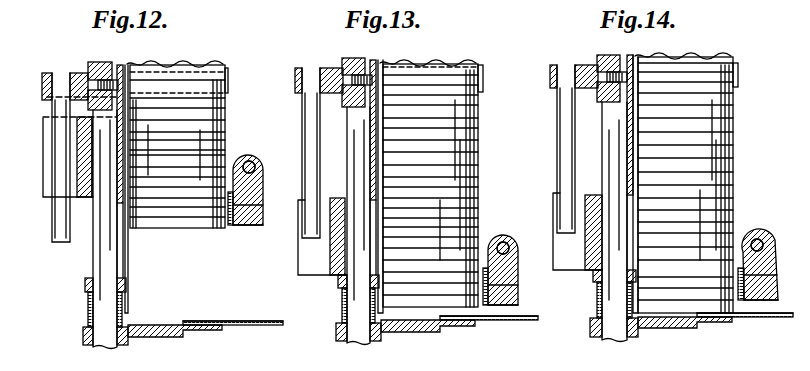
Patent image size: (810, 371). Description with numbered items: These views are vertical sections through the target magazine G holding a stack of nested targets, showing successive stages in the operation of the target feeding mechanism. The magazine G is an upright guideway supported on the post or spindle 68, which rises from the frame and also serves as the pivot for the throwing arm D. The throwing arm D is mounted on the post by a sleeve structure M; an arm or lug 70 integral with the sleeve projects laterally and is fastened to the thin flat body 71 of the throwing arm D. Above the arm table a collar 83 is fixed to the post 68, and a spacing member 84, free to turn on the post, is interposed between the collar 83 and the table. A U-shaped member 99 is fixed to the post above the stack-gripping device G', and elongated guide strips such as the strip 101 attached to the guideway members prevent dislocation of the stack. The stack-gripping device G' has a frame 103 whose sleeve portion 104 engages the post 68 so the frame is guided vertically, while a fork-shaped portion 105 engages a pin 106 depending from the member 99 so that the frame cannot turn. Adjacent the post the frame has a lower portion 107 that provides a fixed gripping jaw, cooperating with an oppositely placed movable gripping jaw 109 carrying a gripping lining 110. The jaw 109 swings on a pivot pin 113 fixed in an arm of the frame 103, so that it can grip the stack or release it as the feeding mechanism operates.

In FIG. 12, the U-shaped member 99 is at (76, 74).
In FIG. 13, the U-shaped member 99 is at (326, 69).
In FIG. 14, the U-shaped member 99 is at (581, 66).
In FIG. 12, the post or spindle 68 is at (95, 62).
In FIG. 13, the post or spindle 68 is at (346, 58).
In FIG. 14, the post or spindle 68 is at (601, 55).
In FIG. 12, the pin 106 is at (55, 114).
In FIG. 13, the pin 106 is at (305, 152).
In FIG. 14, the pin 106 is at (560, 148).
In FIG. 12, the fork-shaped portion 105 is at (45, 130).
In FIG. 13, the fork-shaped portion 105 is at (298, 212).
In FIG. 14, the fork-shaped portion 105 is at (553, 192).
In FIG. 12, the sleeve portion 104 is at (85, 164).
In FIG. 13, the sleeve portion 104 is at (333, 240).
In FIG. 14, the sleeve portion 104 is at (590, 210).
In FIG. 12, the frame 103 is at (88, 200).
In FIG. 13, the frame 103 is at (330, 258).
In FIG. 14, the frame 103 is at (589, 266).
In FIG. 12, the lower portion 107 is at (100, 205).
In FIG. 12, the guide strip 101 is at (128, 257).
In FIG. 12, the collar 83 is at (85, 285).
In FIG. 13, the collar 83 is at (338, 284).
In FIG. 14, the collar 83 is at (593, 280).
In FIG. 12, the spacing member 84 is at (88, 310).
In FIG. 13, the spacing member 84 is at (342, 307).
In FIG. 14, the spacing member 84 is at (597, 303).
In FIG. 12, the sleeve structure M is at (83, 340).
In FIG. 13, the sleeve structure M is at (339, 342).
In FIG. 14, the sleeve structure M is at (592, 332).
In FIG. 12, the arm or lug 70 is at (185, 330).
In FIG. 13, the arm or lug 70 is at (440, 328).
In FIG. 14, the arm or lug 70 is at (697, 325).
In FIG. 12, the body of the throwing arm 71 is at (243, 321).
In FIG. 13, the body of the throwing arm 71 is at (503, 322).
In FIG. 14, the body of the throwing arm 71 is at (760, 318).
In FIG. 12, the throwing arm D is at (283, 326).
In FIG. 13, the throwing arm D is at (520, 322).
In FIG. 14, the throwing arm D is at (790, 318).
In FIG. 12, the pivot pin 113 is at (248, 154).
In FIG. 13, the pivot pin 113 is at (500, 235).
In FIG. 14, the pivot pin 113 is at (760, 232).
In FIG. 12, the stack-gripping device G' is at (260, 189).
In FIG. 13, the stack-gripping device G' is at (514, 262).
In FIG. 14, the stack-gripping device G' is at (769, 250).
In FIG. 12, the target magazine G is at (190, 142).
In FIG. 13, the target magazine G is at (444, 182).
In FIG. 14, the target magazine G is at (701, 183).
In FIG. 12, the movable gripping jaw 109 is at (250, 228).
In FIG. 13, the movable gripping jaw 109 is at (517, 282).
In FIG. 14, the movable gripping jaw 109 is at (776, 262).
In FIG. 12, the gripping lining 110 is at (231, 226).
In FIG. 13, the gripping lining 110 is at (485, 300).
In FIG. 14, the gripping lining 110 is at (776, 288).